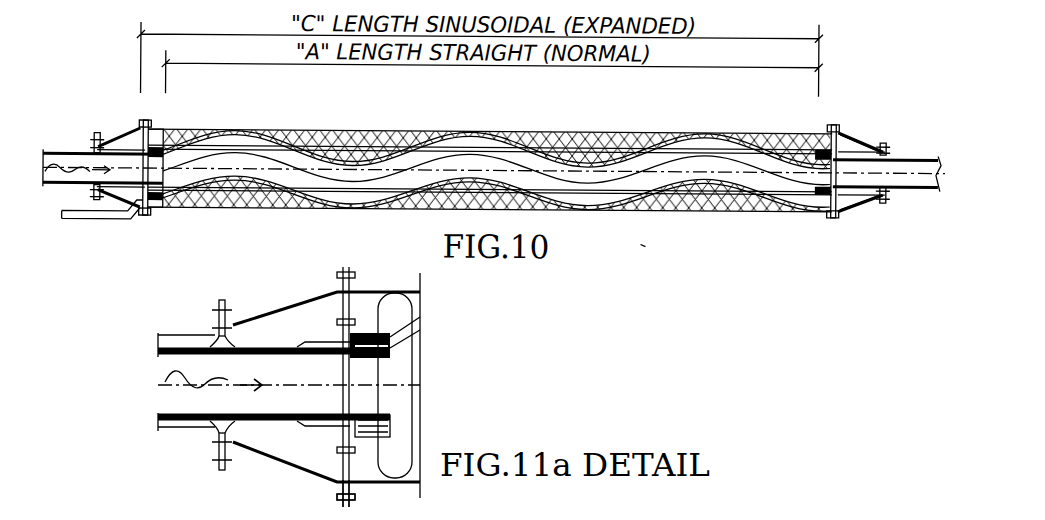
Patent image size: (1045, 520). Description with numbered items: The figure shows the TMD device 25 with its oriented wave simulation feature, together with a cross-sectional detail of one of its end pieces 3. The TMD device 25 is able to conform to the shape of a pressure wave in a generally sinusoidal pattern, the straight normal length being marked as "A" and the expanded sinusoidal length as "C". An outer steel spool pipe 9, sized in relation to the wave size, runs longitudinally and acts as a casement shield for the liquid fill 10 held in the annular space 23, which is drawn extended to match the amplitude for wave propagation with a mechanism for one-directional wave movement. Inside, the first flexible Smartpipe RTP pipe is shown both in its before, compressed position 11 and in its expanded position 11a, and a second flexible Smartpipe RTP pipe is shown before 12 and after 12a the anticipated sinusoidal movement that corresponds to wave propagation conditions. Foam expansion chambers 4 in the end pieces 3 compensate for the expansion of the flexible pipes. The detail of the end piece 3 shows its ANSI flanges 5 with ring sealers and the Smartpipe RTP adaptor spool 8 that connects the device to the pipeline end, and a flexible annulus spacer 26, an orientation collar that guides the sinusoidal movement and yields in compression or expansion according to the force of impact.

In FIG. 10, the end piece assembly 3 is at (195, 133).
In FIG. 11A, the end piece assembly 3 is at (277, 463).
In FIG. 10, the chamber 4 is at (858, 190).
In FIG. 11A, the chamber 4 is at (292, 310).
In FIG. 11A, the ANSI flange 5 is at (335, 488).
In FIG. 11A, the Smartpipe RTP adaptor spool 8 is at (393, 385).
In FIG. 10, the outer steel spool pipe 9 is at (512, 127).
In FIG. 10, the liquid fill 10 is at (258, 206).
In FIG. 10, the innermost flexible Smartpipe RTP 11 is at (762, 203).
In FIG. 10, the first flexible Smartpipe RTP pipe in expanded position 11a is at (587, 155).
In FIG. 10, the second flexible Smartpipe RTP pipe 12 is at (708, 196).
In FIG. 10, the second flexible Smartpipe RTP pipe after sinusoidal movement 12a is at (675, 129).
In FIG. 10, the annular space 23 is at (212, 205).
In FIG. 10, the TMD device 25 is at (643, 254).
In FIG. 11A, the annulus spacer 26 is at (395, 458).